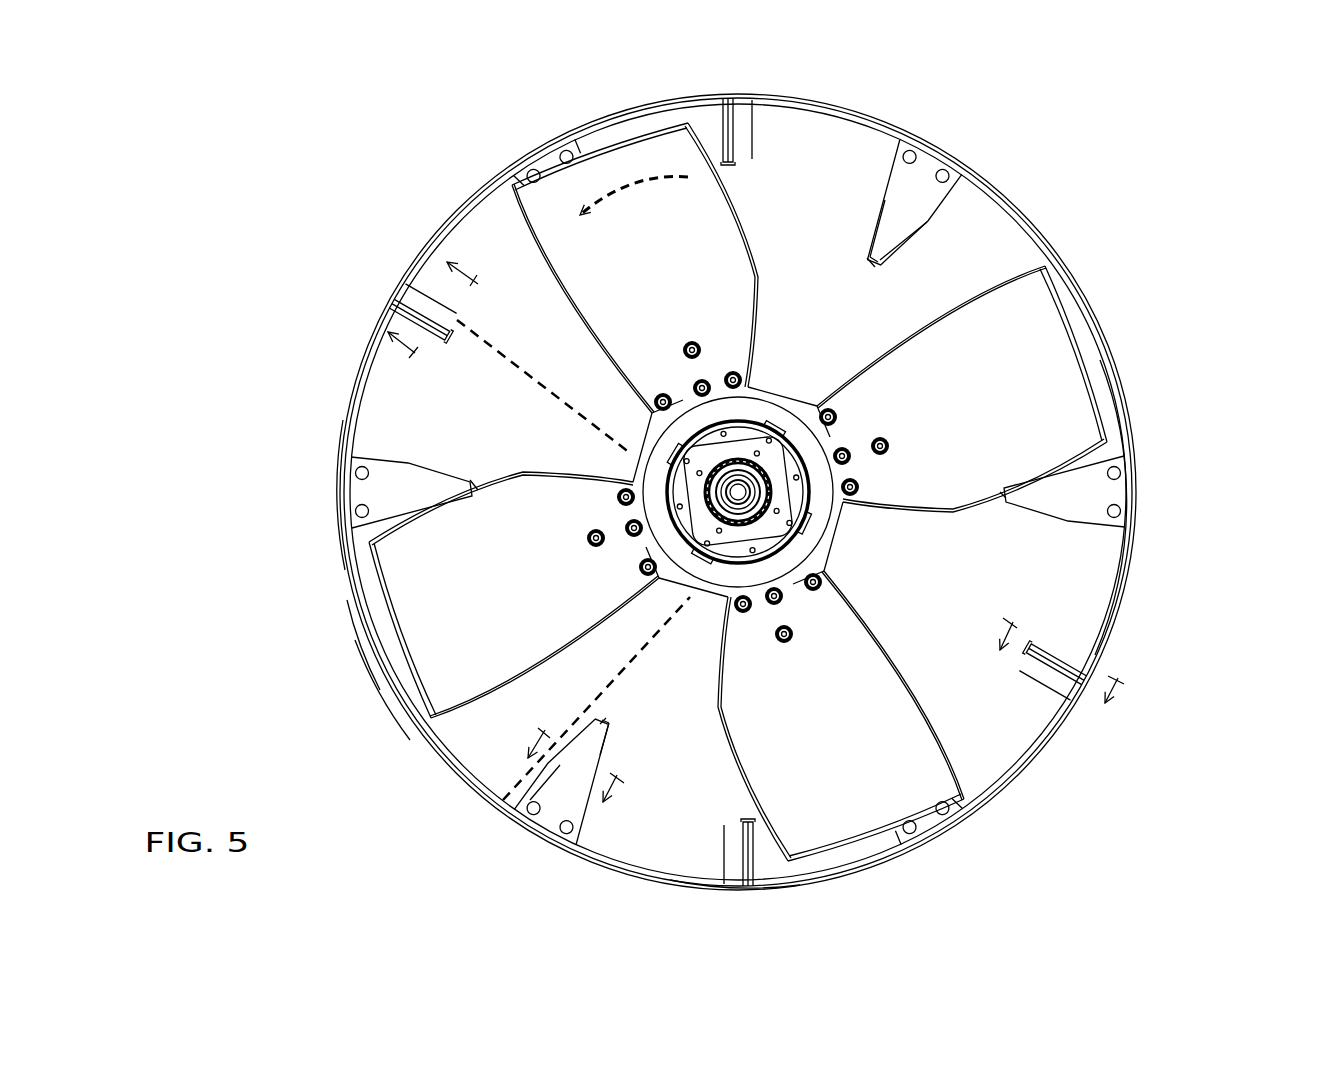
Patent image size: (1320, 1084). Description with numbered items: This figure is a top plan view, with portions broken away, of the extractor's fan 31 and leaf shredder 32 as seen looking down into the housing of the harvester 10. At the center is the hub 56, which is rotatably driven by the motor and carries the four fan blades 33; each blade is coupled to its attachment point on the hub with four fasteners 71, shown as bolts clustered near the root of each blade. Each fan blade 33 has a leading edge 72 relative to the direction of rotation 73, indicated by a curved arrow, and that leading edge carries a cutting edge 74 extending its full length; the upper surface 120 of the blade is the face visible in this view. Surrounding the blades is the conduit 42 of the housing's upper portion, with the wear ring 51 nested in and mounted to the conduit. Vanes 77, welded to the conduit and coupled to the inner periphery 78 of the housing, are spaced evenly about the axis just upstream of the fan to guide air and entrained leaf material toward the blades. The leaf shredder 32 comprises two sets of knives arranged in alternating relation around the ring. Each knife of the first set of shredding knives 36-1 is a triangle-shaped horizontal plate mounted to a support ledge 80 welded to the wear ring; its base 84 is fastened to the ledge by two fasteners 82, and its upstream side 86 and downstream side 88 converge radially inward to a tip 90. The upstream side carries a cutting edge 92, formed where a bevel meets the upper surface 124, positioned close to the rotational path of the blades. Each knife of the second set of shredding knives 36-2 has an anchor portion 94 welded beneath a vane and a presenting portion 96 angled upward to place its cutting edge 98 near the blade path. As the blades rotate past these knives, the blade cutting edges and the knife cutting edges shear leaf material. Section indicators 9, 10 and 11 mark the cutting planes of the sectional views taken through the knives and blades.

The section line 9- 9 is at (1010, 620).
The harvester 10 is at (545, 730).
The section line 11- 11 is at (400, 366).
The fan 31 is at (721, 494).
The leaf shredder 32 is at (721, 492).
The fan blades 33 is at (738, 492).
The first set of shredding knives 36-1 is at (488, 905).
The second set of shredding knives 36-2 is at (726, 110).
The conduit 42 is at (739, 492).
The wear ring 51 is at (721, 494).
The hub 56 is at (860, 548).
The fasteners 71 is at (733, 380).
The leading edge 72 is at (738, 492).
The direction of rotation 73 is at (623, 188).
The cutting edge 74 is at (890, 345).
The vanes 77 is at (808, 142).
The inner periphery 78 is at (739, 492).
The support ledges 80 is at (736, 501).
The fasteners 82 is at (568, 150).
The base 84 is at (736, 494).
The upstream side 86 is at (905, 262).
The downstream side 88 is at (867, 232).
The tip 90 is at (870, 268).
The cutting edge 92 is at (923, 222).
The anchor portion 94 is at (743, 501).
The presenting portion 96 is at (743, 501).
The cutting edge 98 is at (743, 501).
The upper surface 120 is at (773, 337).
The upper surface 124 is at (736, 503).